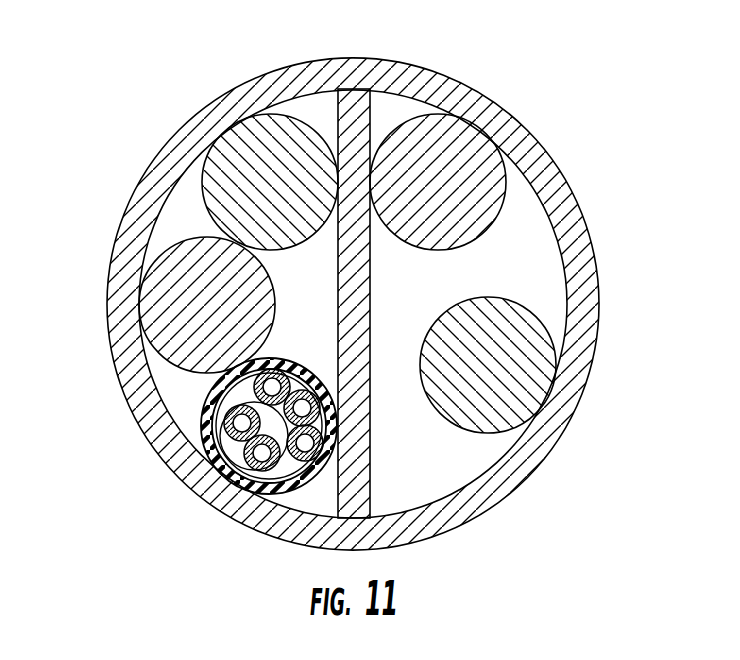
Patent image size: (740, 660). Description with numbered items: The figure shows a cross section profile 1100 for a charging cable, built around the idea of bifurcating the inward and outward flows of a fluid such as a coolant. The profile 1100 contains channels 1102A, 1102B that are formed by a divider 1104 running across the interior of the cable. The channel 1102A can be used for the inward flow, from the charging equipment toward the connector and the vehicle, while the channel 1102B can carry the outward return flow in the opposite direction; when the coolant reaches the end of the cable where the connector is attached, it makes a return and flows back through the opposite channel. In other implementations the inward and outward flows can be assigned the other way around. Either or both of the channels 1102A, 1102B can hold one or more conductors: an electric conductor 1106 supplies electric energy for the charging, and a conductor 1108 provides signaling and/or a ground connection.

The cross section profile 1100 is at (505, 527).
The channel 1102A is at (257, 110).
The channel 1102B is at (445, 107).
The divider 1104 is at (368, 337).
The electric conductor 1106 is at (428, 394).
The conductor 1108 is at (207, 412).